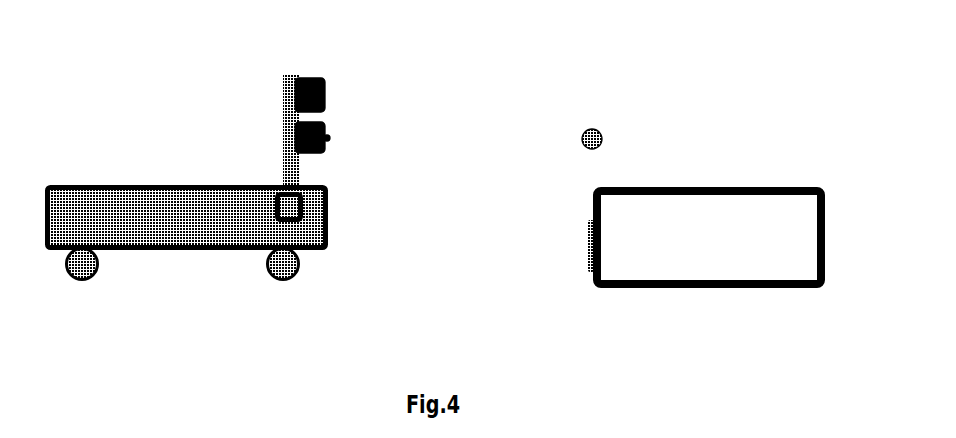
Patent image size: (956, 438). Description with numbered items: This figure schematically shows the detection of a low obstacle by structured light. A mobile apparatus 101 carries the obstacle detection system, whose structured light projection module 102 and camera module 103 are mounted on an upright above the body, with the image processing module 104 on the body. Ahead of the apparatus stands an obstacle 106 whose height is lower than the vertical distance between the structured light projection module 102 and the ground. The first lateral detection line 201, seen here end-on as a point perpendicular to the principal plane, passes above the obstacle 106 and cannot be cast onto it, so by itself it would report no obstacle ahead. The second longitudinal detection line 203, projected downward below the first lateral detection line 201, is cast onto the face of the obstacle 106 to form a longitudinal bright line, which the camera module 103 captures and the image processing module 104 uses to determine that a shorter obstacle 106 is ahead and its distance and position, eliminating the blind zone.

The mobile robot cart 101 is at (167, 310).
The structured light projection module 102 is at (295, 153).
The camera module 103 is at (295, 94).
The image processing module 104 is at (275, 210).
The obstacle 106 is at (712, 315).
The first lateral detection line 201 is at (622, 142).
The second longitudinal detection line 203 is at (588, 245).